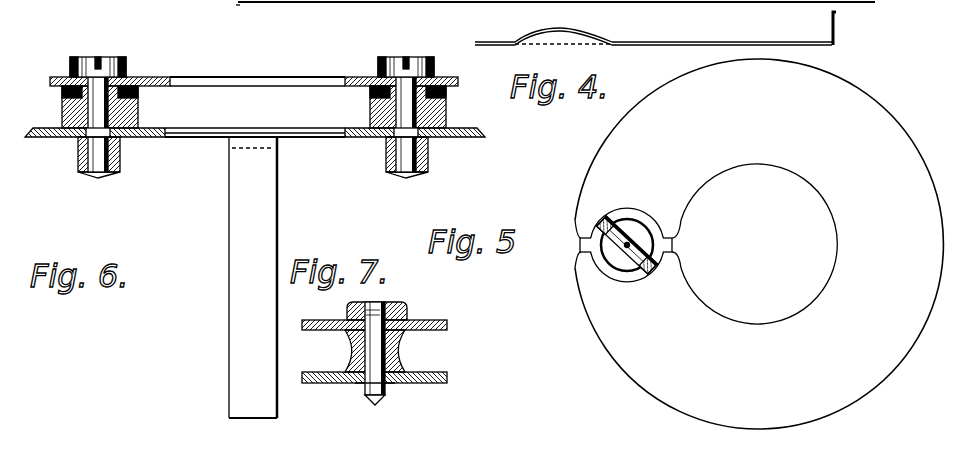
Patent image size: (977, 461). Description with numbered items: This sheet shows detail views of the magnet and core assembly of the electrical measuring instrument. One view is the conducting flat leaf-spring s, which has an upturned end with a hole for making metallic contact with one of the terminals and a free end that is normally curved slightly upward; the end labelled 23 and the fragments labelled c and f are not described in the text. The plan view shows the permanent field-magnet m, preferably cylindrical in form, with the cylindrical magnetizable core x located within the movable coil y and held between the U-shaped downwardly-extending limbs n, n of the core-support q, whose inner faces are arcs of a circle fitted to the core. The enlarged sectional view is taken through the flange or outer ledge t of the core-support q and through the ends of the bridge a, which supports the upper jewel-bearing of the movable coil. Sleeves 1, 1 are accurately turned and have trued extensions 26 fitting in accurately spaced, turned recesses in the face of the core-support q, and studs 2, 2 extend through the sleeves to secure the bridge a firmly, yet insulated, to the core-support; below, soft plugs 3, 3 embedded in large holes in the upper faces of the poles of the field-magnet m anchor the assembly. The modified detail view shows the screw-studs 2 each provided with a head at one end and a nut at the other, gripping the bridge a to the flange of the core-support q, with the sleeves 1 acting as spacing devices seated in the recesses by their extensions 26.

In FIG. 6, the bridge a is at (208, 84).
In FIG. 7, the bridge a is at (384, 313).
In FIG. 6, the sleeves 1 is at (132, 109).
In FIG. 7, the sleeves 1 is at (400, 353).
In FIG. 6, the outer ledge t is at (38, 128).
In FIG. 6, the core-support q is at (158, 128).
In FIG. 7, the core-support q is at (420, 382).
In FIG. 6, the soft plugs 3 is at (120, 157).
In FIG. 6, the studs 2 is at (252, 103).
In FIG. 7, the studs 2 is at (377, 343).
In FIG. 6, the trued extensions 26 is at (80, 137).
In FIG. 7, the trued extensions 26 is at (353, 383).
In FIG. 6, the limbs n is at (248, 197).
In FIG. 5, the limbs n is at (580, 246).
In FIG. 4, the part c is at (541, 17).
In FIG. 4, the part f is at (283, 3).
In FIG. 4, the flat leaf-spring s is at (653, 31).
In FIG. 4, the strip end 23 is at (737, 3).
In FIG. 5, the permanent field-magnet m is at (832, 230).
In FIG. 5, the magnetizable core x is at (622, 262).
In FIG. 5, the movable coil y is at (610, 220).